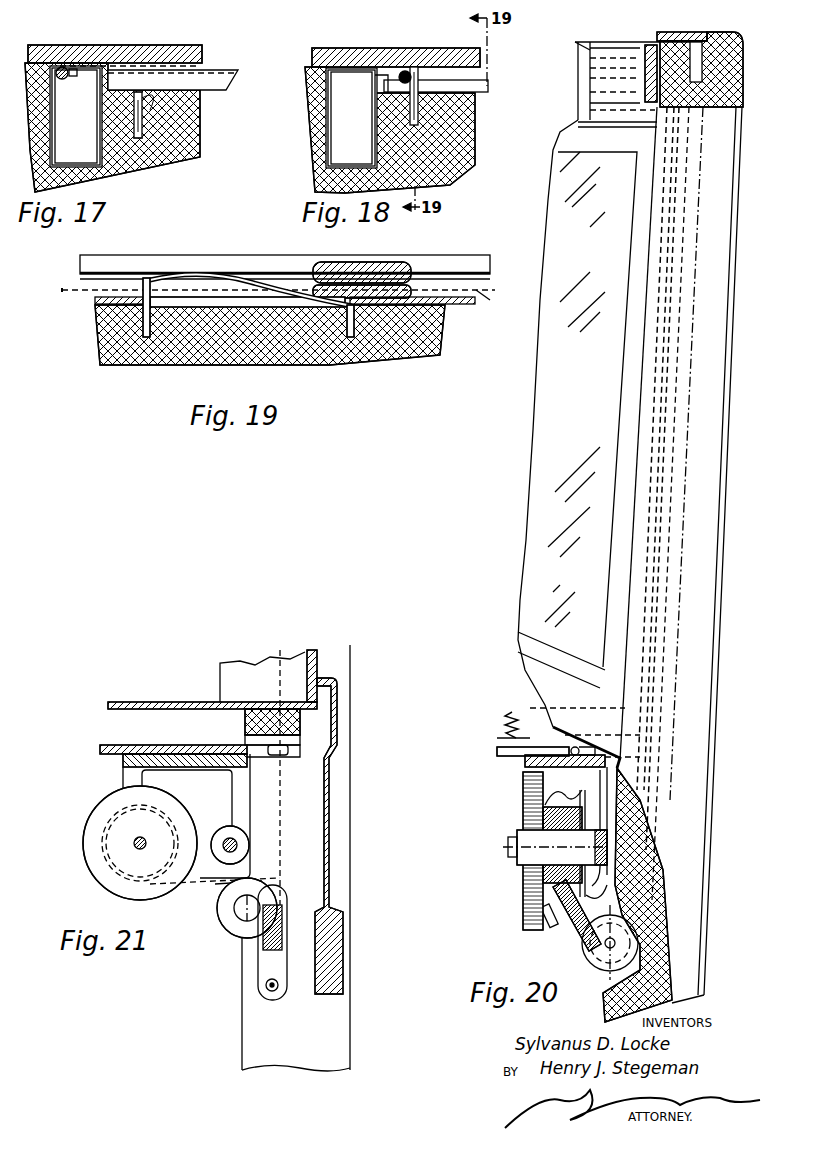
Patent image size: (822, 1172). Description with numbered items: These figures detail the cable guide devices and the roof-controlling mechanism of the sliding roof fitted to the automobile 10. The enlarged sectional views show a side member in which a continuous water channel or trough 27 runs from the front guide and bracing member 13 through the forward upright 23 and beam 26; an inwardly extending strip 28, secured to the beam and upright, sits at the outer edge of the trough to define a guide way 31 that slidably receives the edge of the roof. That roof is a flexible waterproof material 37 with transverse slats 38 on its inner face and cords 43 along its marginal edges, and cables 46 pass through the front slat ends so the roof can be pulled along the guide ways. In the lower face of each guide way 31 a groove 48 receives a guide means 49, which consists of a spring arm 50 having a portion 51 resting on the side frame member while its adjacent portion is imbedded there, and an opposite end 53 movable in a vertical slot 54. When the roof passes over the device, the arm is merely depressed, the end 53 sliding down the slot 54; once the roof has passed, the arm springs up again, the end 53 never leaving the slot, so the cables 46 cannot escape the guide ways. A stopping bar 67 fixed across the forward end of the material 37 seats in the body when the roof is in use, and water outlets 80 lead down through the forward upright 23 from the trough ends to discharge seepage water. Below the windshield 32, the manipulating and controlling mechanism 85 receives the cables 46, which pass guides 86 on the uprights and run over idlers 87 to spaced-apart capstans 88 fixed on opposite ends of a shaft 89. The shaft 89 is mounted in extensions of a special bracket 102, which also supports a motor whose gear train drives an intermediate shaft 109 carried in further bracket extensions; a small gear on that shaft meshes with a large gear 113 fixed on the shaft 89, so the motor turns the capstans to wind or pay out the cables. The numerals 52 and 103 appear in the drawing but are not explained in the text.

In FIG. 21, the automobile 10 is at (148, 702).
In FIG. 20, the front guide and bracing member 13 is at (600, 100).
In FIG. 21, the forward upright 23 is at (232, 680).
In FIG. 19, the beam 26 is at (420, 345).
In FIG. 20, the beam 26 is at (743, 104).
In FIG. 17, the water channel 27 is at (76, 116).
In FIG. 18, the water channel 27 is at (351, 118).
In FIG. 20, the water channel 27 is at (712, 70).
In FIG. 17, the inwardly extending strip 28 is at (199, 47).
In FIG. 18, the inwardly extending strip 28 is at (404, 48).
In FIG. 19, the inwardly extending strip 28 is at (165, 252).
In FIG. 20, the inwardly extending strip 28 is at (700, 40).
In FIG. 18, the guide way 31 is at (455, 86).
In FIG. 19, the guide way 31 is at (110, 290).
In FIG. 20, the windshield 32 is at (591, 409).
In FIG. 21, the windshield 32 is at (313, 652).
In FIG. 17, the flexible waterproof material 37 is at (226, 70).
In FIG. 19, the flexible waterproof material 37 is at (470, 273).
In FIG. 20, the flexible waterproof material 37 is at (585, 42).
In FIG. 17, the slat 38 is at (225, 86).
In FIG. 19, the slat 38 is at (465, 302).
In FIG. 20, the slat 38 is at (630, 42).
In FIG. 17, the cord 43 is at (66, 66).
In FIG. 18, the cable 46 is at (414, 70).
In FIG. 19, the cable 46 is at (62, 291).
In FIG. 20, the cable 46 is at (660, 433).
In FIG. 21, the cable 46 is at (275, 652).
In FIG. 17, the groove 48 is at (150, 103).
In FIG. 19, the groove 48 is at (230, 312).
In FIG. 19, the guide means 49 is at (258, 312).
In FIG. 19, the spring arm 50 is at (203, 277).
In FIG. 19, the portion of spring arm 51 is at (330, 308).
In FIG. 19, the cord end 52 is at (345, 337).
In FIG. 17, the end of guide means 53 is at (140, 118).
In FIG. 18, the end of guide means 53 is at (426, 92).
In FIG. 19, the end of guide means 53 is at (105, 318).
In FIG. 19, the vertical slot 54 is at (138, 362).
In FIG. 19, the stopping bar 67 is at (385, 268).
In FIG. 20, the water outlet 80 is at (685, 378).
In FIG. 20, the manipulating and controlling mechanism 85 is at (546, 857).
In FIG. 21, the manipulating and controlling mechanism 85 is at (132, 840).
In FIG. 20, the guide 86 is at (640, 787).
In FIG. 20, the idler 87 is at (585, 937).
In FIG. 21, the idler 87 is at (245, 912).
In FIG. 20, the capstan 88 is at (523, 780).
In FIG. 21, the capstan 88 is at (105, 876).
In FIG. 20, the shaft 89 is at (508, 842).
In FIG. 21, the shaft 89 is at (134, 840).
In FIG. 20, the special bracket 102 is at (520, 755).
In FIG. 21, the special bracket 102 is at (200, 750).
In FIG. 20, the spring block 103 is at (530, 700).
In FIG. 21, the spring block 103 is at (300, 720).
In FIG. 21, the shaft 109 is at (226, 840).
In FIG. 20, the large gear 113 is at (543, 808).